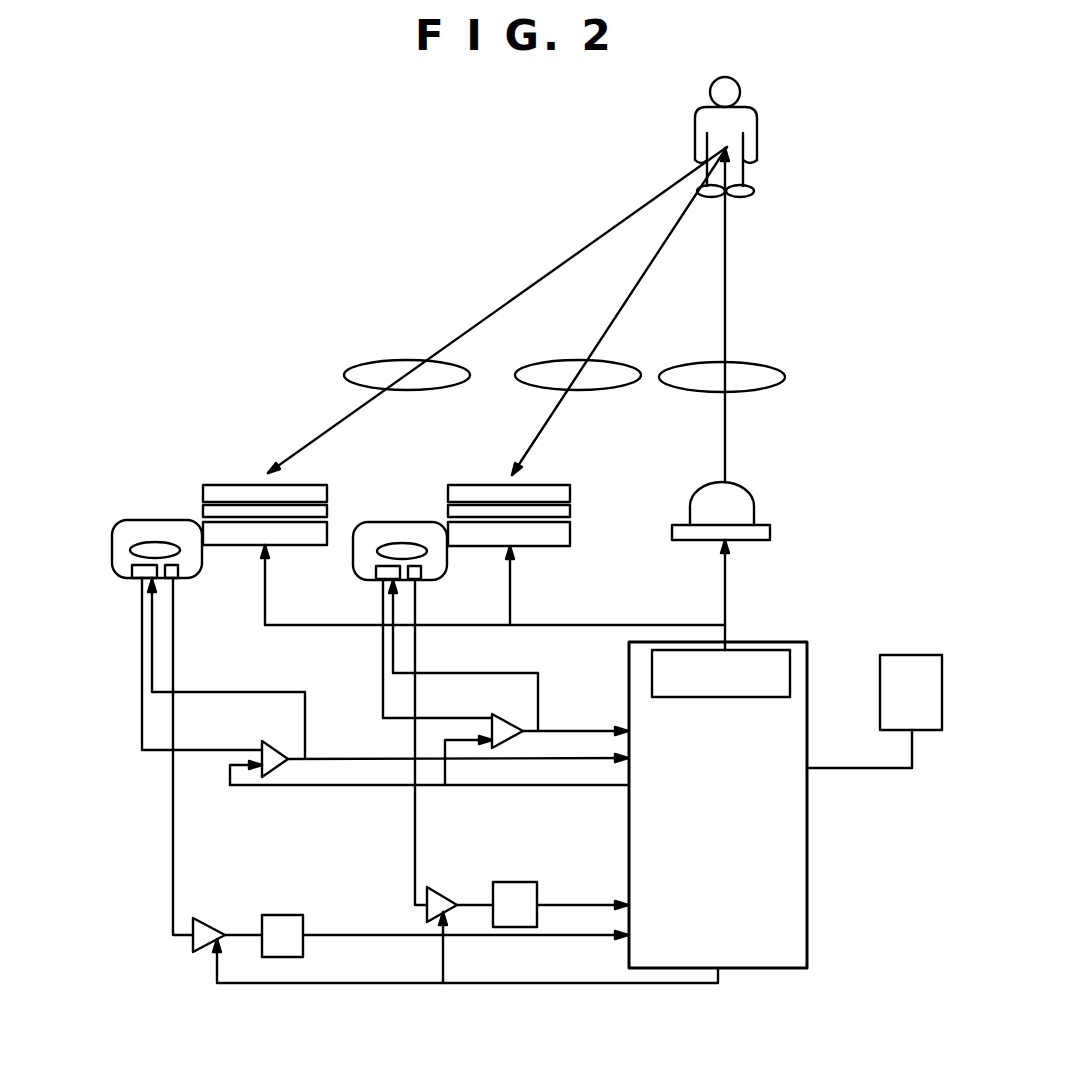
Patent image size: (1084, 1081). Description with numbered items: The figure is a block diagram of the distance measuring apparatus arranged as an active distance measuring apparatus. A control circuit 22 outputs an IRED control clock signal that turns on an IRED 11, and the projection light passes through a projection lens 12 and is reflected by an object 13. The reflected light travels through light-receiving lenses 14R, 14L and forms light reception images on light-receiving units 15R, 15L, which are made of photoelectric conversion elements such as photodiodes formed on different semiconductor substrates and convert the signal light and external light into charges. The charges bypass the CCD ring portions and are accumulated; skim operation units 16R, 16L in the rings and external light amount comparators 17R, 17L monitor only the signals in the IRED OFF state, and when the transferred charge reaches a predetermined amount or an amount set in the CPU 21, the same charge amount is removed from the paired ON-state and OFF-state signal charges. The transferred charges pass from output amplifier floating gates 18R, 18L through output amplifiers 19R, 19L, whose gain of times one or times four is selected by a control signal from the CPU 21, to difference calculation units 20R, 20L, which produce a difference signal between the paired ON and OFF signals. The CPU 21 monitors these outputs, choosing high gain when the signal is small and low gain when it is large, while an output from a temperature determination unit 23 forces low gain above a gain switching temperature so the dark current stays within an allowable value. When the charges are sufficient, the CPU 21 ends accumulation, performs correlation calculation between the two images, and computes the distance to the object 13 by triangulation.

The IRED 11 is at (747, 490).
The projection lens 12 is at (764, 362).
The object 13 is at (758, 122).
The light-receiving lens 14L is at (364, 360).
The light-receiving lens 14R is at (640, 362).
The light-receiving unit 15L is at (223, 485).
The light-receiving unit 15R is at (462, 485).
The skim operation unit 16L is at (128, 580).
The skim operation unit 16R is at (372, 581).
The external light amount comparator 17L is at (262, 744).
The external light amount comparator 17R is at (492, 716).
The output amplifier floating gate 18L is at (178, 580).
The output amplifier floating gate 18R is at (422, 581).
The output amplifier 19L is at (210, 917).
The output amplifier 19R is at (444, 886).
The difference calculation unit 20L is at (282, 915).
The difference calculation unit 20R is at (515, 882).
The CPU 21 is at (808, 837).
The control circuit 22 is at (779, 648).
The temperature determination unit 23 is at (913, 655).